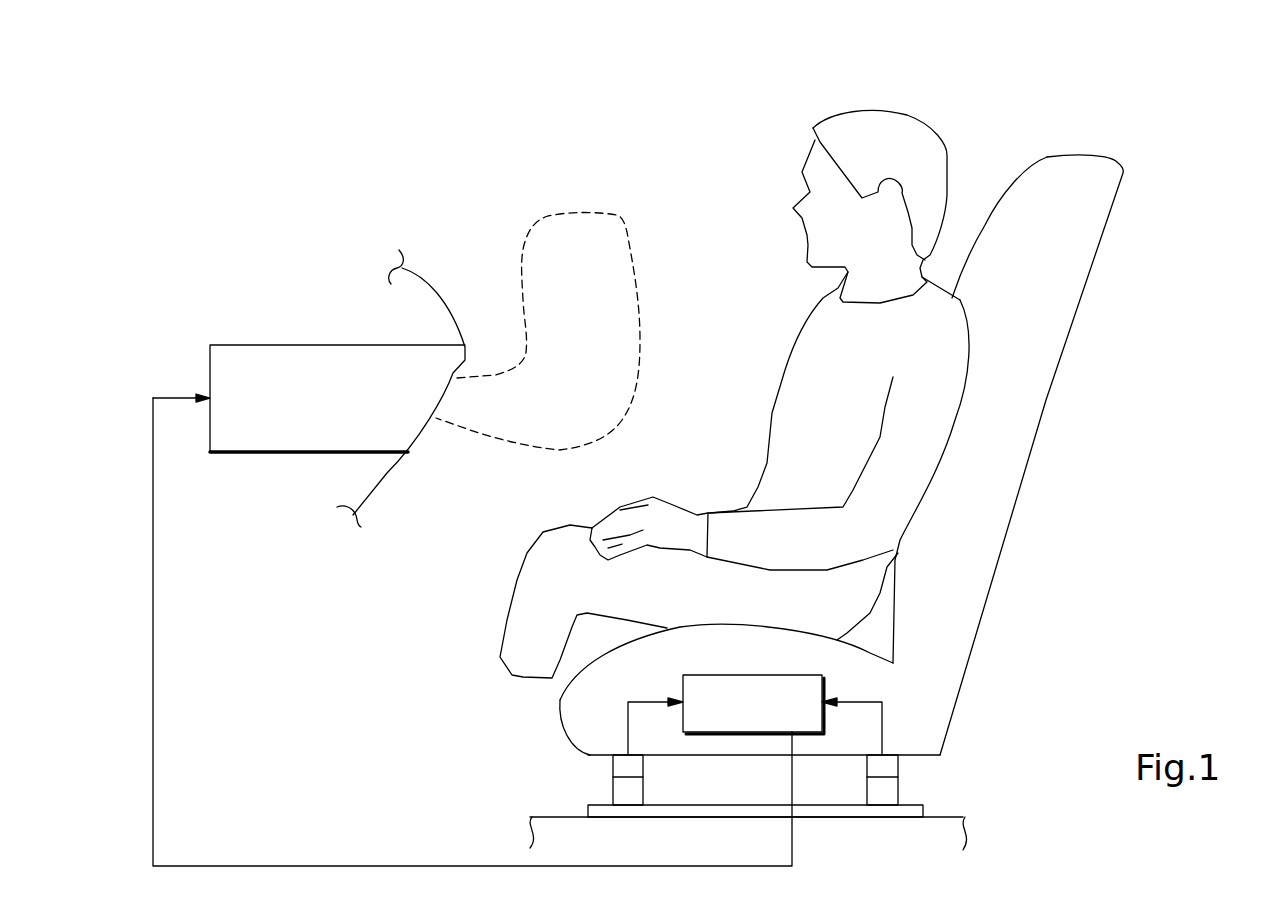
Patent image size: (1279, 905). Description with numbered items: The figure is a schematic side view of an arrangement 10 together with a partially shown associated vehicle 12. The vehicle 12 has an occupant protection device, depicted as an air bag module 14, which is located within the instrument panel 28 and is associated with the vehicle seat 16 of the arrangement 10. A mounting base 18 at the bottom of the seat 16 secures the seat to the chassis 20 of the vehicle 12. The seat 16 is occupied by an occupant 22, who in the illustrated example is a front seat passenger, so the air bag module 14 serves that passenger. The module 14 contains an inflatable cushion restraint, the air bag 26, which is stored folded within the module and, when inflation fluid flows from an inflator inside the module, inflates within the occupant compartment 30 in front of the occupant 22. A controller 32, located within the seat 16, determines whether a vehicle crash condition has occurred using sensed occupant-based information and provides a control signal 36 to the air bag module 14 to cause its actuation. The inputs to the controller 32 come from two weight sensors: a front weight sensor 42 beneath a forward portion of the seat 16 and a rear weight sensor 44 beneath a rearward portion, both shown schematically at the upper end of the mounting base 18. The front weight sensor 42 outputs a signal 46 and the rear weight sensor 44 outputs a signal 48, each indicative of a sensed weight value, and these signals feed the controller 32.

The arrangement 10 is at (1114, 141).
The vehicle 12 is at (308, 174).
The air bag module 14 is at (217, 358).
The vehicle seat 16 is at (1012, 460).
The mounting base 18 is at (923, 813).
The chassis 20 is at (968, 830).
The occupant 22 is at (957, 328).
The air bag 26 is at (530, 237).
The instrument panel 28 is at (417, 282).
The occupant compartment 30 is at (735, 230).
The controller 32 is at (717, 682).
The control signal 36 is at (243, 866).
The front weight sensor 42 is at (620, 766).
The rear weight sensor 44 is at (890, 766).
The signal 46 is at (640, 700).
The signal 48 is at (867, 700).